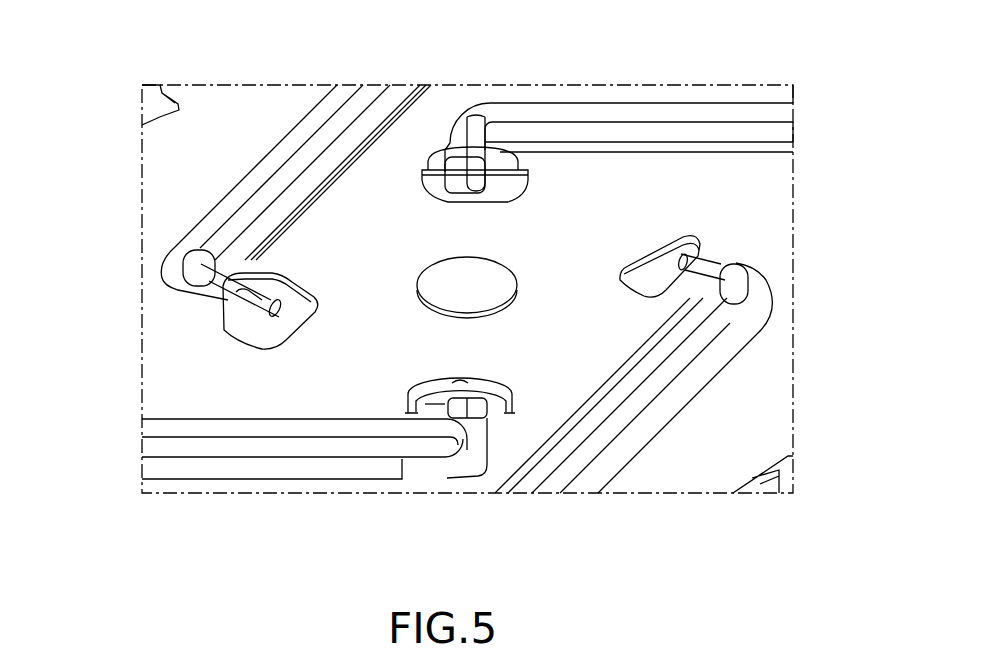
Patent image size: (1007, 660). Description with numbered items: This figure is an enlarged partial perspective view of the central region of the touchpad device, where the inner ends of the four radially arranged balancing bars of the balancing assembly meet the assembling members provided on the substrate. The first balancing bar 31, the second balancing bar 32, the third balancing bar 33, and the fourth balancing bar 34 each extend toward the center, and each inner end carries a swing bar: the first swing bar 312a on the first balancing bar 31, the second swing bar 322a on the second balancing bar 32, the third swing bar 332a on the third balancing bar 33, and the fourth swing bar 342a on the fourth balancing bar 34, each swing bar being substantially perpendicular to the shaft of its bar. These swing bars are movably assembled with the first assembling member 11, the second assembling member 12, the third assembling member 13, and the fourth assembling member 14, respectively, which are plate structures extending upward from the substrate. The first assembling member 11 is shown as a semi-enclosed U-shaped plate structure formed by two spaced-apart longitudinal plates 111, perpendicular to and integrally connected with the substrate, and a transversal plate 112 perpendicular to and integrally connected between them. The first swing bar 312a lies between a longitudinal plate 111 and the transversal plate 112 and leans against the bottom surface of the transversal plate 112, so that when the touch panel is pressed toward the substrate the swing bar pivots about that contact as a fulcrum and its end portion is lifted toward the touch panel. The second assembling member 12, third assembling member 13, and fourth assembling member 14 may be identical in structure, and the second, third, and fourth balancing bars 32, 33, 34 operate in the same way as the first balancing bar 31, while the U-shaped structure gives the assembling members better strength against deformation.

The first assembling member 11 is at (473, 485).
The longitudinal plate 111 is at (430, 407).
The transversal plate 112 is at (457, 400).
The second assembling member 12 is at (225, 318).
The third assembling member 13 is at (507, 165).
The fourth assembling member 14 is at (708, 238).
The first balancing bar 31 is at (277, 427).
The first swing bar 312a is at (430, 404).
The second balancing bar 32 is at (218, 242).
The second swing bar 322a is at (225, 280).
The third balancing bar 33 is at (580, 112).
The third swing bar 332a is at (470, 137).
The fourth balancing bar 34 is at (750, 300).
The fourth swing bar 342a is at (705, 266).